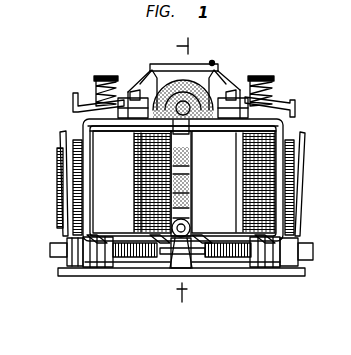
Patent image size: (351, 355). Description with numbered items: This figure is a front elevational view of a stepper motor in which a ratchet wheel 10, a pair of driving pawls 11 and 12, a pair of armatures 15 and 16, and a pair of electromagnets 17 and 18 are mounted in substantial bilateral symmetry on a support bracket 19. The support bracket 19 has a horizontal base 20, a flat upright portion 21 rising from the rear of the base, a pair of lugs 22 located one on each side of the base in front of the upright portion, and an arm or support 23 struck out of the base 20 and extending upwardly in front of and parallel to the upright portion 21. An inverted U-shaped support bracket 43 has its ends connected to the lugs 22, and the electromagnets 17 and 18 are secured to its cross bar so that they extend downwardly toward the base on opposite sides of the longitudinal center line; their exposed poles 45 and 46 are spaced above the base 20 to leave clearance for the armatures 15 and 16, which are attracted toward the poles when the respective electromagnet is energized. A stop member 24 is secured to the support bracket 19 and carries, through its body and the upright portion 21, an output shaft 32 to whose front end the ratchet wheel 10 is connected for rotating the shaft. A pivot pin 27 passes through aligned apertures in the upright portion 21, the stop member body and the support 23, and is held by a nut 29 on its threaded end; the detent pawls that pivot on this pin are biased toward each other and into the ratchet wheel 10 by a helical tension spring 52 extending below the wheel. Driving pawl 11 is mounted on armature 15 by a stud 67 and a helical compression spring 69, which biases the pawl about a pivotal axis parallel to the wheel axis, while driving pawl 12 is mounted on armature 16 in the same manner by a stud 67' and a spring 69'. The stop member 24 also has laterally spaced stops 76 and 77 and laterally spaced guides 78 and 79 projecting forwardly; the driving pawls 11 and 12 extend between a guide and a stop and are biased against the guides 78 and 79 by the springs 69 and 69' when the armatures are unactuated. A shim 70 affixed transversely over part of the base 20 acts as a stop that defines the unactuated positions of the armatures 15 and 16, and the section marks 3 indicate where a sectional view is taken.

The section line 3 is at (177, 169).
The ratchet wheel 10 is at (254, 87).
The driving pawl 11 is at (137, 93).
The driving pawl 12 is at (232, 100).
The armature 15 is at (117, 250).
The armature 16 is at (243, 273).
The electromagnet 17 is at (120, 196).
The electromagnet 18 is at (225, 202).
The support bracket 19 is at (303, 199).
The horizontal base 20 is at (292, 273).
The flat upright portion 21 is at (300, 227).
The lugs 22 is at (87, 277).
The arm or support 23 is at (188, 274).
The stop member 24 is at (216, 55).
The pivot pin 27 is at (163, 268).
The nut 29 is at (123, 262).
The output shaft 32 is at (183, 108).
The support bracket 43 is at (285, 125).
The pole 45 is at (106, 266).
The pole 46 is at (225, 262).
The helical tension spring 52 is at (192, 166).
The stud 67 is at (100, 77).
The stud 67' is at (284, 87).
The helical compression spring 69 is at (85, 90).
The spring 69' is at (289, 100).
The shim 70 is at (208, 274).
The stop 76 is at (157, 78).
The stop 77 is at (218, 113).
The guide 78 is at (138, 90).
The guide 79 is at (225, 93).